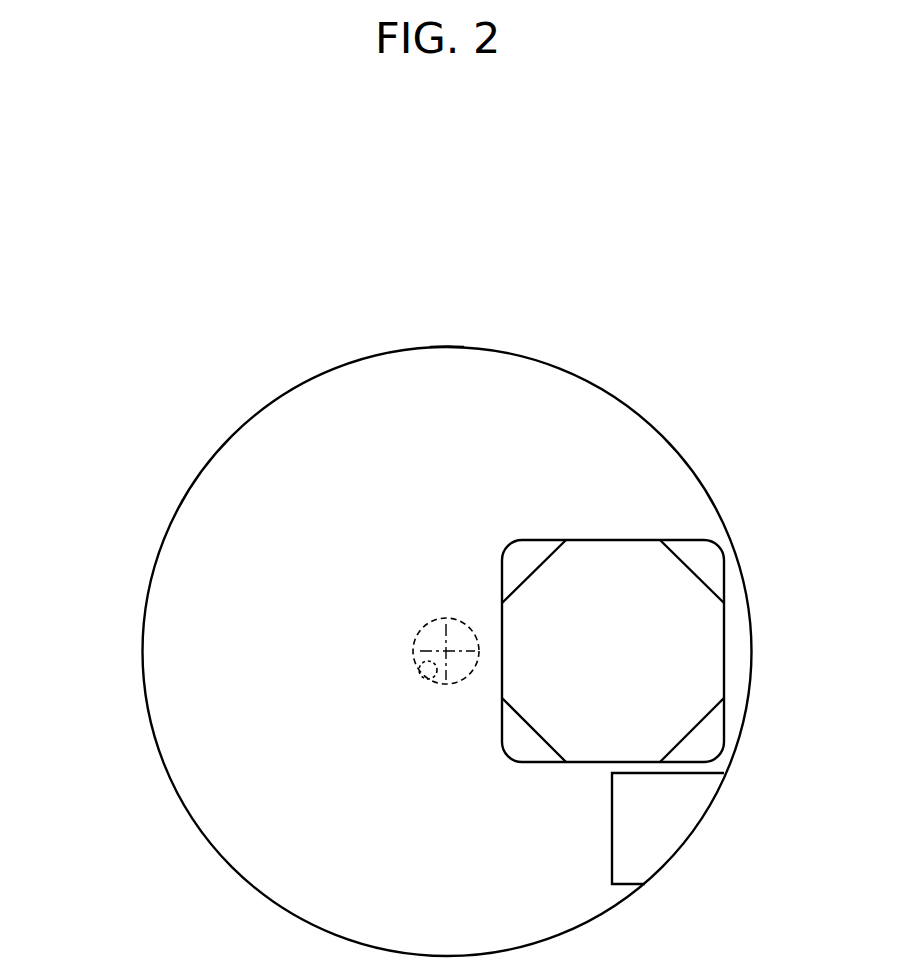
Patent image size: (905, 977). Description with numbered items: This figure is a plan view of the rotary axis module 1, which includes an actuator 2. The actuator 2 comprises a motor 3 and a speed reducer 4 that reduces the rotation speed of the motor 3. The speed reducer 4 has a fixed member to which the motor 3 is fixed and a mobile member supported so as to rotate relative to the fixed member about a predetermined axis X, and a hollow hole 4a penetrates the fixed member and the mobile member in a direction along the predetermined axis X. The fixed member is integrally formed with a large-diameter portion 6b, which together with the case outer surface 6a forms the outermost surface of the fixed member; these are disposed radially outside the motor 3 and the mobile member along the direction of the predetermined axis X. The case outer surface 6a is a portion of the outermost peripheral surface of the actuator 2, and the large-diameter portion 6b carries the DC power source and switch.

The rotary axis module 1 is at (193, 244).
The actuator 2 is at (111, 393).
The motor 3 is at (546, 525).
The speed reducer 4 is at (211, 431).
The hollow hole 4a is at (432, 683).
The case outer surface 6a is at (693, 833).
The large-diameter portion 6b is at (443, 346).
The predetermined axis X is at (446, 651).